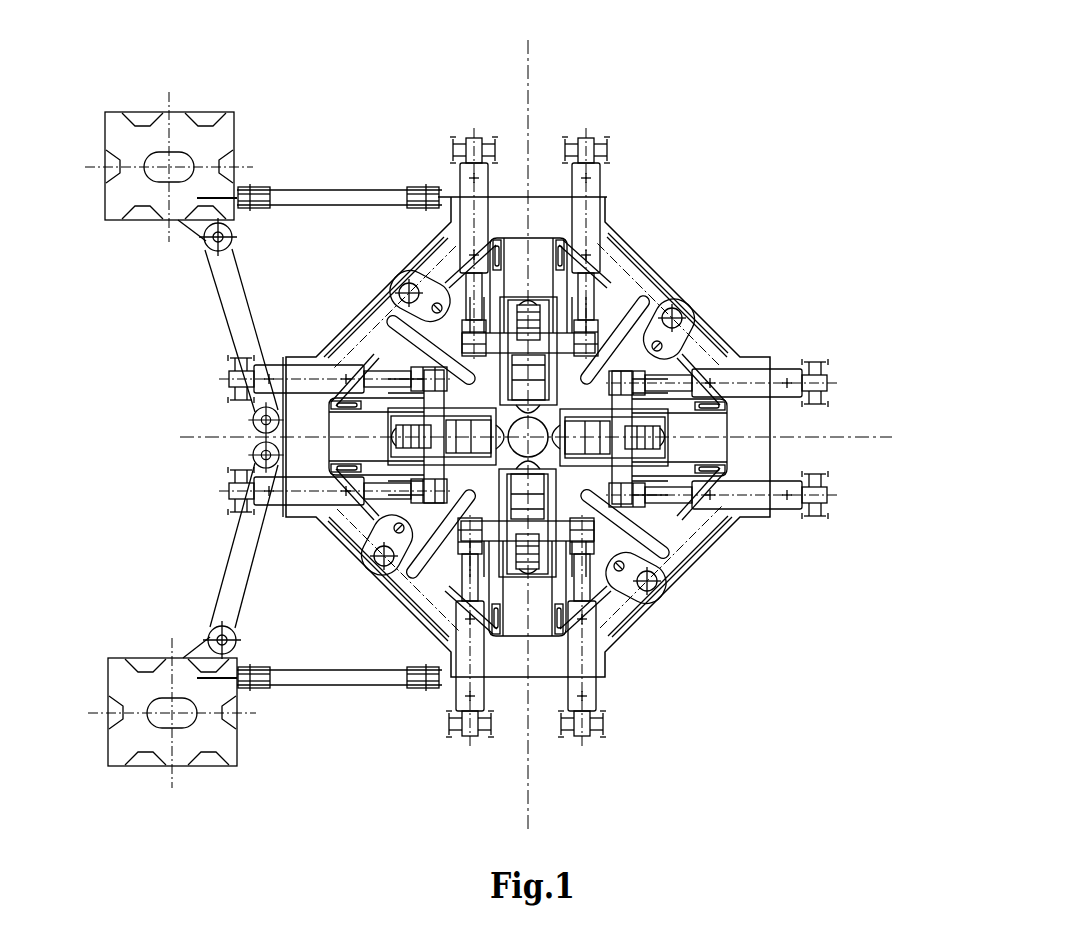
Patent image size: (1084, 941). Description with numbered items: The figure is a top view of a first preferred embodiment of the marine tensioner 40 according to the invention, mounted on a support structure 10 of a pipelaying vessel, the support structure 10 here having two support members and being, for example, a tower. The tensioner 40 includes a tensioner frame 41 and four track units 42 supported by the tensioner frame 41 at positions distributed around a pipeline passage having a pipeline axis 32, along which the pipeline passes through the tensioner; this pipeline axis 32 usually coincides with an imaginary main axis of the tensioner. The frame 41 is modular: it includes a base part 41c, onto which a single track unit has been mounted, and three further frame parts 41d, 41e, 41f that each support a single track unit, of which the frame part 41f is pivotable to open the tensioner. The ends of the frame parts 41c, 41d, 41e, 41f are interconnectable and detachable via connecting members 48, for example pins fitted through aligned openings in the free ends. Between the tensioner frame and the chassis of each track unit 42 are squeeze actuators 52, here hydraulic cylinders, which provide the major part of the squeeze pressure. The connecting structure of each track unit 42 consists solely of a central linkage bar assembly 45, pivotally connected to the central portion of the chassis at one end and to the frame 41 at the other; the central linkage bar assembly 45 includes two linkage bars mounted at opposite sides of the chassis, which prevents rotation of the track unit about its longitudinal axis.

The support structure 10 is at (235, 128).
The pipeline axis 32 is at (521, 428).
The tensioner 40 is at (765, 718).
The tensioner frame 41 is at (667, 231).
The base part 41c is at (343, 522).
The frame part 41d is at (443, 615).
The frame part 41e is at (448, 247).
The frame part 41f is at (713, 352).
The track unit 42 is at (542, 259).
The central linkage bar assembly 45 is at (497, 262).
The connecting member 48 is at (676, 312).
The squeeze actuator 52 is at (468, 206).